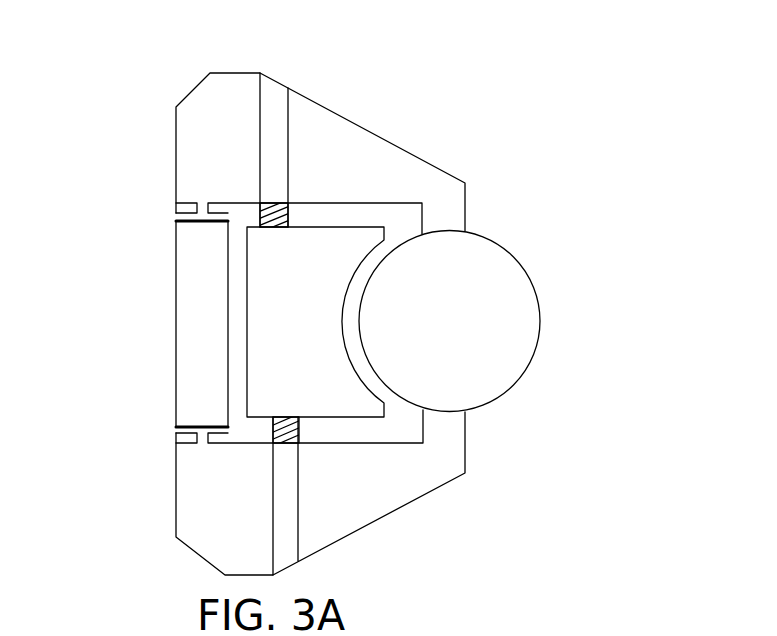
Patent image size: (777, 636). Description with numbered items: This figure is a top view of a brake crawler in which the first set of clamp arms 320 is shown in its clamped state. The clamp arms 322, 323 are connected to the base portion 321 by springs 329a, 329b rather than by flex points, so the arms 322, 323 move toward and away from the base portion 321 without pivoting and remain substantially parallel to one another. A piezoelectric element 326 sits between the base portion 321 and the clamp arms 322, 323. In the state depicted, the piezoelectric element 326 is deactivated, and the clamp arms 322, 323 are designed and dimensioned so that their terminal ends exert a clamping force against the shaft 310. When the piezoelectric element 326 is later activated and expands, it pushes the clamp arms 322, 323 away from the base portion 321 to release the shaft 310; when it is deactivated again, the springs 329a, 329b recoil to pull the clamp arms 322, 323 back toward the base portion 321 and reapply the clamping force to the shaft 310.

The first set of clamp arms 320 is at (241, 308).
The clamp arm 322 is at (338, 152).
The base portion 321 is at (208, 509).
The clamp arm 323 is at (360, 498).
The piezoelectric element 326 is at (192, 323).
The spring 329a is at (260, 207).
The spring 329b is at (273, 418).
The shaft 310 is at (490, 380).